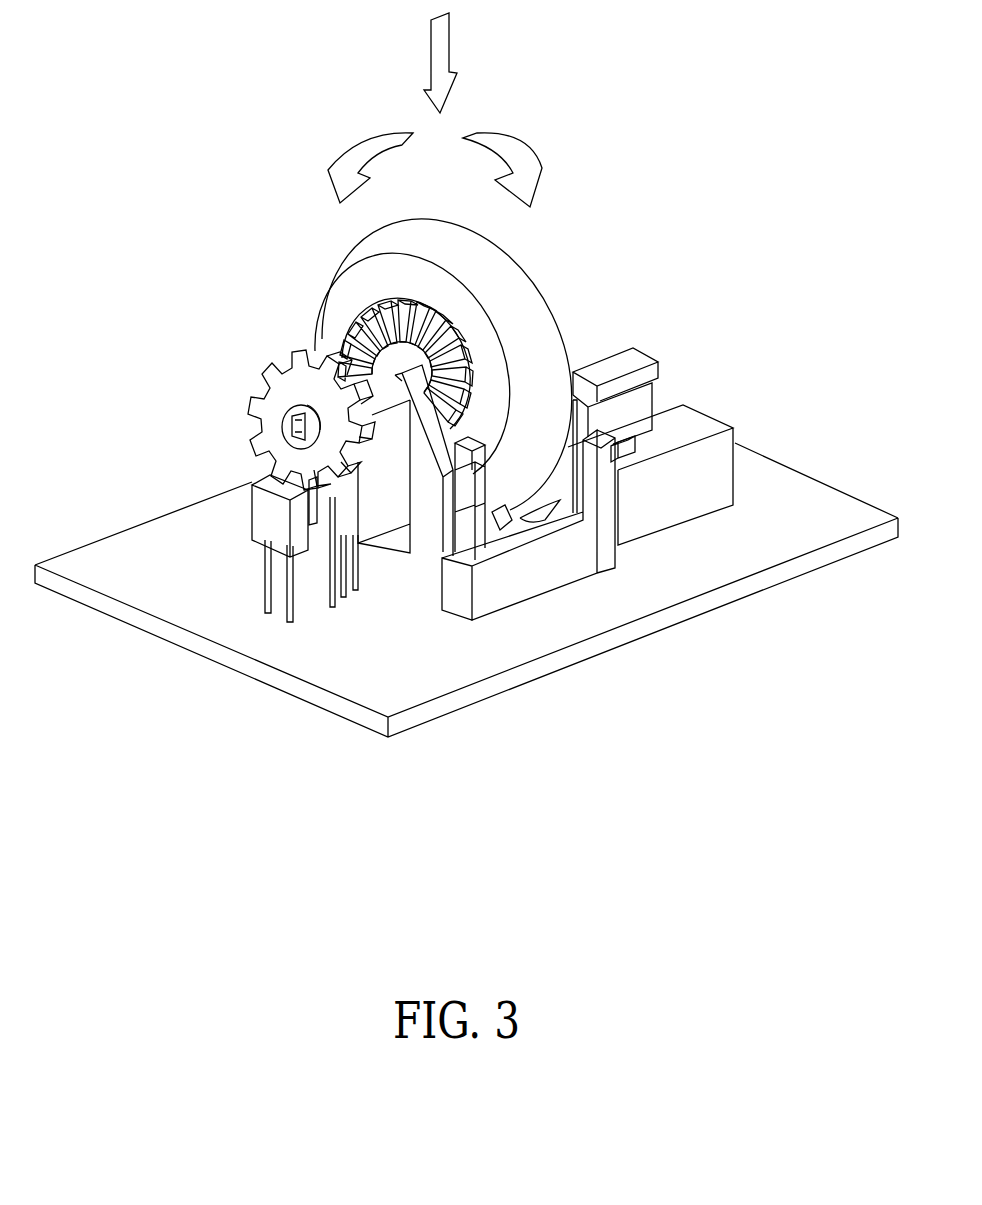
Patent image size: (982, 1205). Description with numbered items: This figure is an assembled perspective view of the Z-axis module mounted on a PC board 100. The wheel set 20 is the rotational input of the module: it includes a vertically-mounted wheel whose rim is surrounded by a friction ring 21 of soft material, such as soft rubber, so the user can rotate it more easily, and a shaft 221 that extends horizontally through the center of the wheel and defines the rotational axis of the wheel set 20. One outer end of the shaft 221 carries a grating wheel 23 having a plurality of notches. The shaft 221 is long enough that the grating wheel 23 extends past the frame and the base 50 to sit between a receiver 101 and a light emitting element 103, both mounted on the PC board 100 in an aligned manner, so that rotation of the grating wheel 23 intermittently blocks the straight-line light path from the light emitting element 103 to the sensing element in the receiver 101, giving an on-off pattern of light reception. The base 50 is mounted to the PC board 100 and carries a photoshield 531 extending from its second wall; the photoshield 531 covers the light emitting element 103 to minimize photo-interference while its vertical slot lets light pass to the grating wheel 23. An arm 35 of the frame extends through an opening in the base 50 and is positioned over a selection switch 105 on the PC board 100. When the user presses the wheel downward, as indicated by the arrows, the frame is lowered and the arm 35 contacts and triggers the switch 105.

The wheel set 20 is at (265, 292).
The friction ring 21 is at (542, 325).
The shaft 221 is at (318, 352).
The grating wheel 23 is at (262, 408).
The arm 35 is at (640, 402).
The base 50 is at (567, 570).
The photoshield 531 is at (380, 518).
The PC board 100 is at (793, 535).
The receiver 101 is at (272, 520).
The light emitting element 103 is at (352, 588).
The selection switch 105 is at (710, 467).